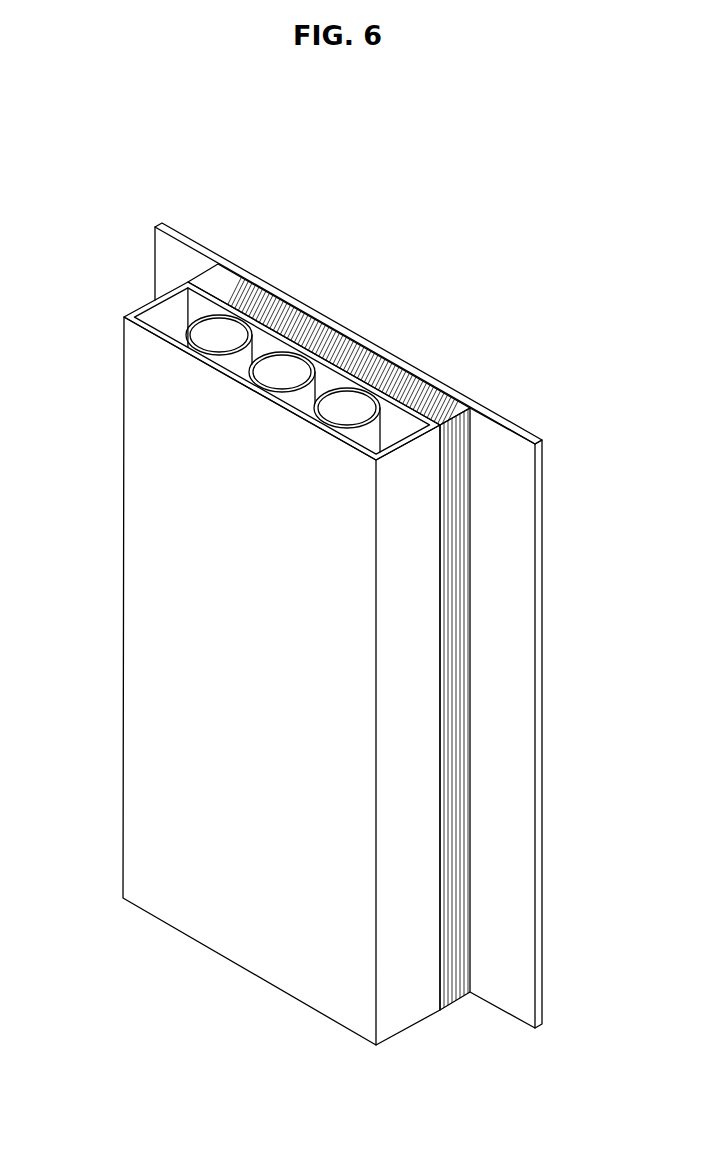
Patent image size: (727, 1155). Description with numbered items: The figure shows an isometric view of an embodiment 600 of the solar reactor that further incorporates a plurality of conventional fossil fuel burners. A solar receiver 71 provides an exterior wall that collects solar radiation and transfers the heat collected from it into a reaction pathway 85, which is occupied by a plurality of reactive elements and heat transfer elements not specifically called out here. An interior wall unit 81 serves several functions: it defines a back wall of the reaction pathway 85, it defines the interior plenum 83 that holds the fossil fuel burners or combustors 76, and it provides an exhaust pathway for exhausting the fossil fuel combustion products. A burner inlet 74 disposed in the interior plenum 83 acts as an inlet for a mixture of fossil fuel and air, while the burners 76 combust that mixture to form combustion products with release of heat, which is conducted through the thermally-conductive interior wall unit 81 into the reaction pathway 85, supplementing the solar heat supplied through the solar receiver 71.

The embodiment of the solar reactor 600 is at (124, 204).
The solar receiver 71 is at (541, 762).
The burner inlet 74 is at (290, 368).
The fossil fuel burner 76 is at (218, 333).
The interior wall unit 81 is at (140, 562).
The interior plenum 83 is at (170, 313).
The reaction pathway 85 is at (455, 572).